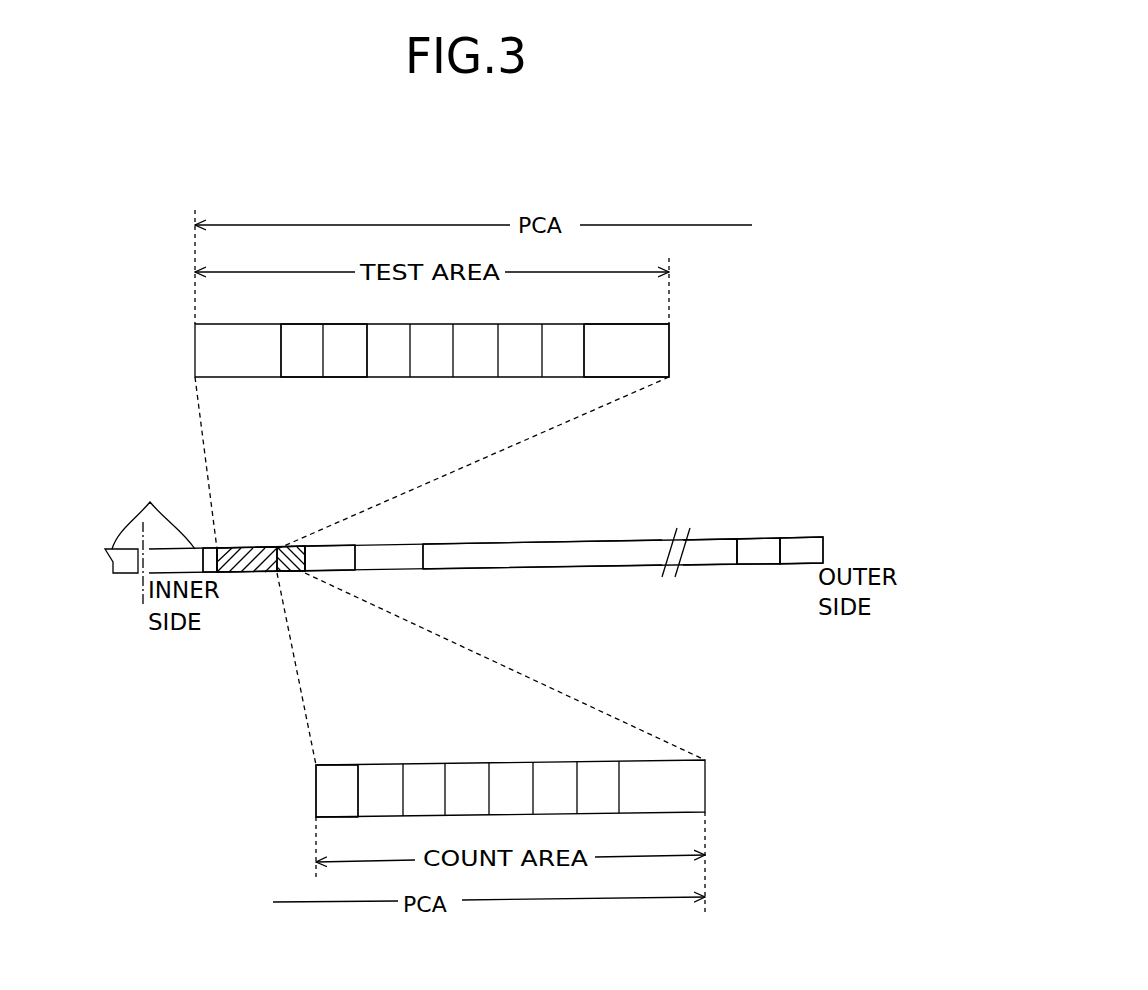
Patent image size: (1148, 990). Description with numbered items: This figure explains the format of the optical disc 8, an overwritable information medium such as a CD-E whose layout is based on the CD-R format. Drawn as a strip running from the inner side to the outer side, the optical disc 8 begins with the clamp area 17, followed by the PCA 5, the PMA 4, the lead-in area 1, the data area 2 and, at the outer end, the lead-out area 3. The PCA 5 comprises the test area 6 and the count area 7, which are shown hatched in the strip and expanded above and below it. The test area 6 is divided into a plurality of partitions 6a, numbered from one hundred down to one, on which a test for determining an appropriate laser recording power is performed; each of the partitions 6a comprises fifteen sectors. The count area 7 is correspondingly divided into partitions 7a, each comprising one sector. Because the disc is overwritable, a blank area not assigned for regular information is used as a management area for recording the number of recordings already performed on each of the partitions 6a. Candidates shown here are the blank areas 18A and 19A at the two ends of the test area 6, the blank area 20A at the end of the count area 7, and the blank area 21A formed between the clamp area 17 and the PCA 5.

The lead-in area 1 is at (388, 572).
The data area 2 is at (713, 540).
The lead-out area 3 is at (760, 564).
The PMA 4 is at (327, 552).
The PCA 5 is at (258, 532).
The test area 6 is at (250, 573).
The partitions 6a is at (365, 378).
The count area 7 is at (290, 573).
The partitions 7a is at (382, 765).
The optical disc 8 is at (794, 530).
The clamp area 17 is at (153, 512).
The blank area 18A is at (208, 353).
The blank area 19A is at (663, 352).
The blank area 20A is at (695, 790).
The blank area 21A is at (210, 548).